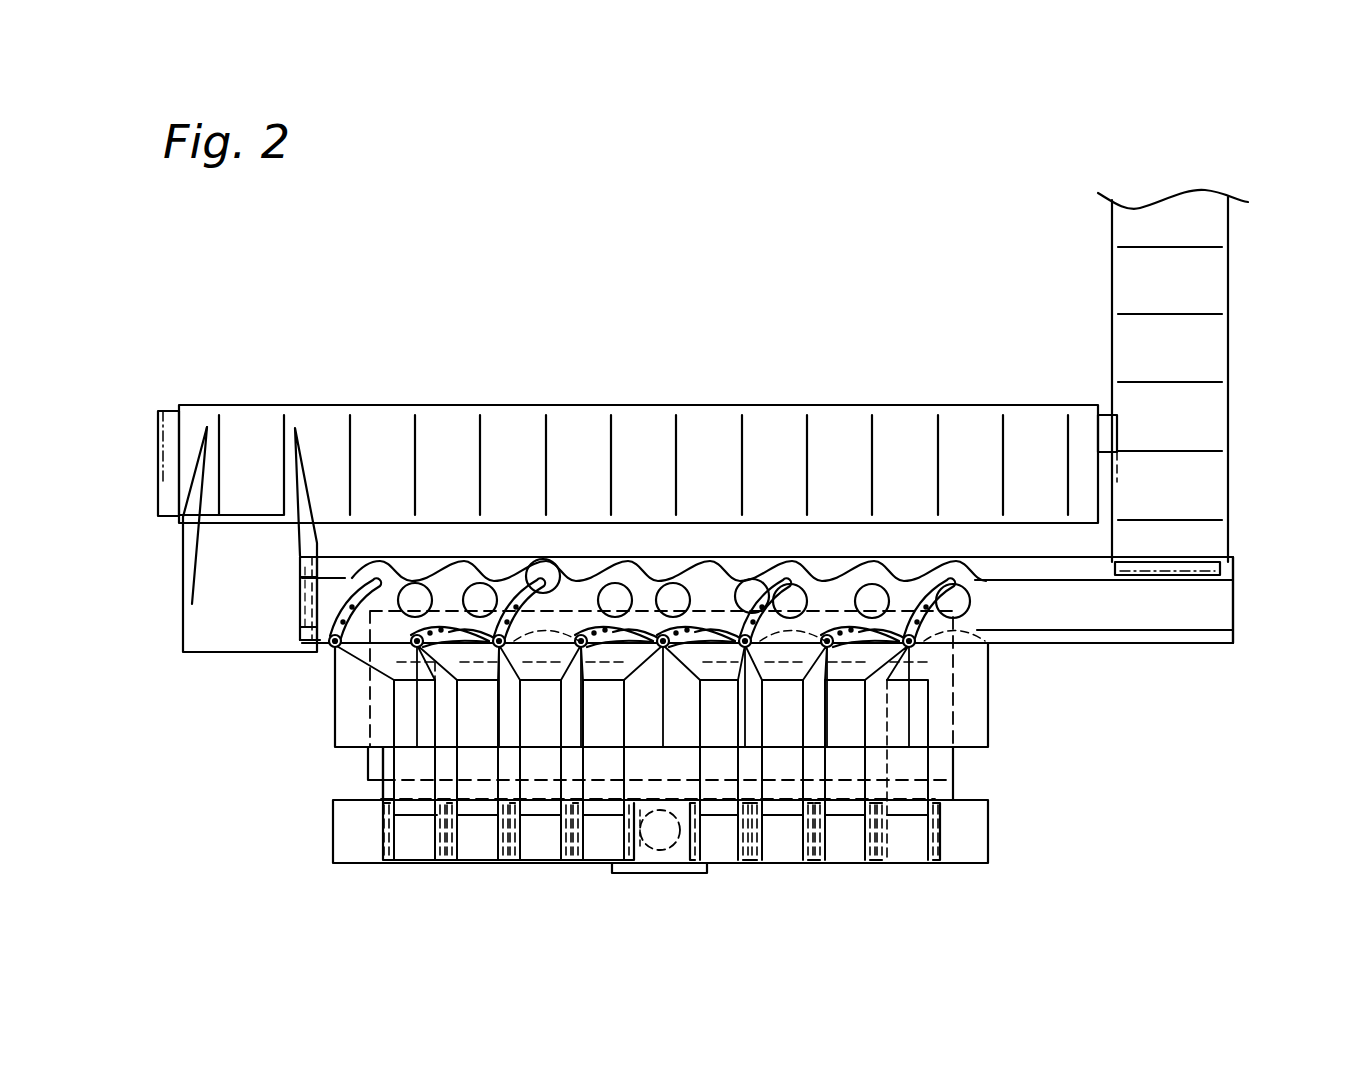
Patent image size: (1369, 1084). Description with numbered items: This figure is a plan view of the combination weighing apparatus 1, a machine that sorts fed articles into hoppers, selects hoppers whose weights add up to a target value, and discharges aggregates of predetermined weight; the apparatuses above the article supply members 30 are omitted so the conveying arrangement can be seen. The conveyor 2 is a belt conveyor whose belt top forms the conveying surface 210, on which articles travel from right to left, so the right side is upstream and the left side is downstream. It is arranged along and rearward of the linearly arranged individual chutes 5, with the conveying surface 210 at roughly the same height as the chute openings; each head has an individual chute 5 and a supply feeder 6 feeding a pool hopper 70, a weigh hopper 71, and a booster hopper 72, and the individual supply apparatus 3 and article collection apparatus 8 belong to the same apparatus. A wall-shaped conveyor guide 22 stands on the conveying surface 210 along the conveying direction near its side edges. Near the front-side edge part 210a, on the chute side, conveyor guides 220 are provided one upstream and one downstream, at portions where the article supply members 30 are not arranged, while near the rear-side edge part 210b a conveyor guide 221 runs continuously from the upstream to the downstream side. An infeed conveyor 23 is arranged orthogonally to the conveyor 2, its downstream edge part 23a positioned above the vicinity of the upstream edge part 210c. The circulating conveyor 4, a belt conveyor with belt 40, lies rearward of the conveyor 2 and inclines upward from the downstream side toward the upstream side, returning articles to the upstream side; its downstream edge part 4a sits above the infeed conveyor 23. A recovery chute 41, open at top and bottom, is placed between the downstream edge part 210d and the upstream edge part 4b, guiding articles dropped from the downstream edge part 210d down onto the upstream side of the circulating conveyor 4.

The combination weighing apparatus 1 is at (603, 785).
The conveyor 2 is at (738, 572).
The individual supply apparatus 3 is at (673, 540).
The circulating conveyor 4 is at (638, 410).
The downstream edge part of the circulating conveyor 4a is at (1100, 467).
The upstream edge part of the circulating conveyor 4b is at (172, 468).
The individual chute 5 is at (342, 686).
The supply feeder 6 is at (407, 758).
The article collection apparatus 8 is at (316, 835).
The conveyor guide 22 is at (1150, 667).
The infeed conveyor 23 is at (1210, 353).
The downstream edge part of the infeed conveyor 23a is at (1182, 576).
The article supply member 30 is at (343, 605).
The belt of the circulating conveyor 40 is at (770, 445).
The recovery chute 41 is at (203, 617).
The pool hopper 70 is at (407, 873).
The weigh hopper 71 is at (752, 761).
The booster hopper 72 is at (877, 761).
The conveying surface 210 is at (1058, 605).
The front-side edge part 210a is at (1013, 647).
The rear-side edge part 210b is at (955, 553).
The upstream edge part of the conveyor 210c is at (1240, 613).
The downstream edge part of the conveyor 210d is at (296, 614).
The conveyor guide 220 is at (1117, 633).
The conveyor guide 221 is at (1117, 582).